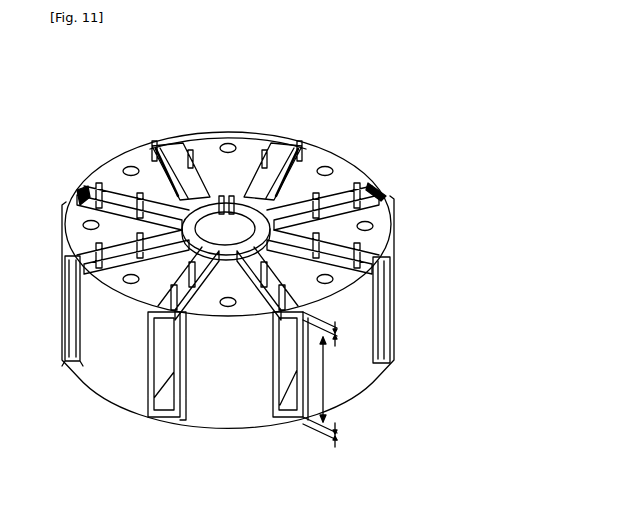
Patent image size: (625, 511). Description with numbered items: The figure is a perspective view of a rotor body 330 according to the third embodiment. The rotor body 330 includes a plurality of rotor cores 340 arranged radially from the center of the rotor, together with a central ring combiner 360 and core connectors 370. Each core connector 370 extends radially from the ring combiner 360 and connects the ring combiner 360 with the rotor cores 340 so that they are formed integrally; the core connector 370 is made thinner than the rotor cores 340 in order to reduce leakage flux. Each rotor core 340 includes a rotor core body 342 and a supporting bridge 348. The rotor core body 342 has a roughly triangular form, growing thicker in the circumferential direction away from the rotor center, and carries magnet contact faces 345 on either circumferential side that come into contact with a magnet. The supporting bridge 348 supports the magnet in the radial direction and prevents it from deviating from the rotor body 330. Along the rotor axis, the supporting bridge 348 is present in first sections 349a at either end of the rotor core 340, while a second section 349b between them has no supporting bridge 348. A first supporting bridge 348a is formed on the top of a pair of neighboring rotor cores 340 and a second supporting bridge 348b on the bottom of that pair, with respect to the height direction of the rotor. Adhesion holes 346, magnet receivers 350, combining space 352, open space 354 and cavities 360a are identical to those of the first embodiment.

The rotor body 330 is at (200, 65).
The rotor core 340 is at (229, 126).
The rotor core body 342 is at (245, 138).
The magnet contact face 345 is at (259, 168).
The adhesion hole 346 is at (275, 185).
The supporting bridge 348 is at (287, 476).
The first supporting bridge 348a is at (285, 325).
The second supporting bridge 348b is at (285, 418).
The first section 349a is at (336, 336).
The second section 349b is at (326, 390).
The magnet receiver 350 is at (437, 208).
The combining space 352 is at (372, 263).
The open space 354 is at (373, 227).
The ring combiner 360 is at (218, 229).
The cavity 360a is at (155, 145).
The core connector 370 is at (176, 220).